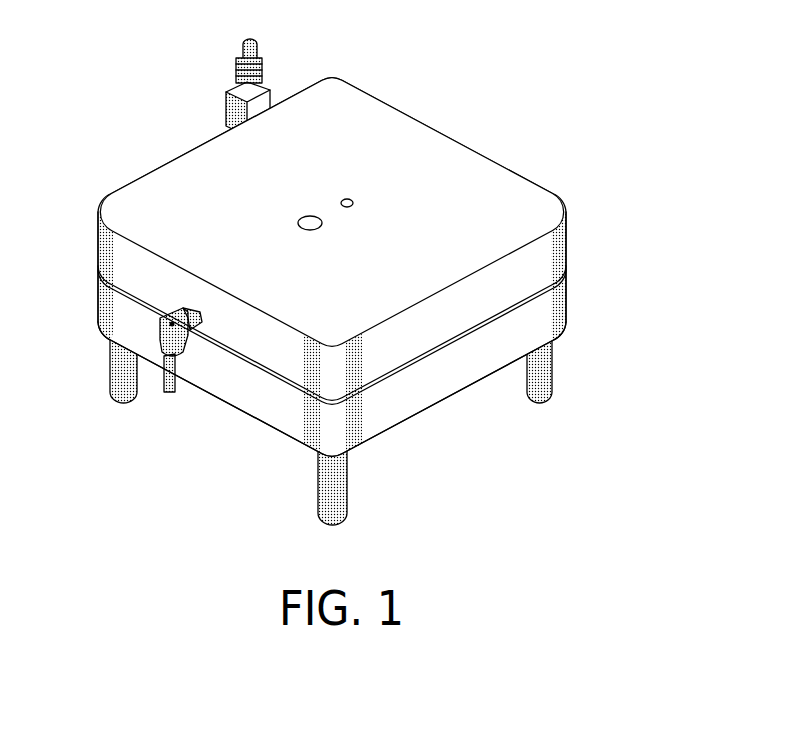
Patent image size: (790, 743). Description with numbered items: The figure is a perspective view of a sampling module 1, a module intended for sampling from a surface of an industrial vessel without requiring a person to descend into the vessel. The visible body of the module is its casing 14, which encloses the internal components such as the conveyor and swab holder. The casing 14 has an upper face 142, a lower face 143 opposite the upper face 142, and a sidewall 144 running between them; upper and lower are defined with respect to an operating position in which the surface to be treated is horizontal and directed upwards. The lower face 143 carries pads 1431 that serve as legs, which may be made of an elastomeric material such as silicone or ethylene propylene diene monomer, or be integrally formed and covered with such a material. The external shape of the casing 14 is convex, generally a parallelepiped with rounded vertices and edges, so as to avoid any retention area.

The sampling module 1 is at (92, 90).
The casing 14 is at (363, 118).
The upper face 142 is at (461, 173).
The sidewall 144 is at (540, 272).
The lower face 143 is at (390, 301).
The pads 1431 is at (552, 394).